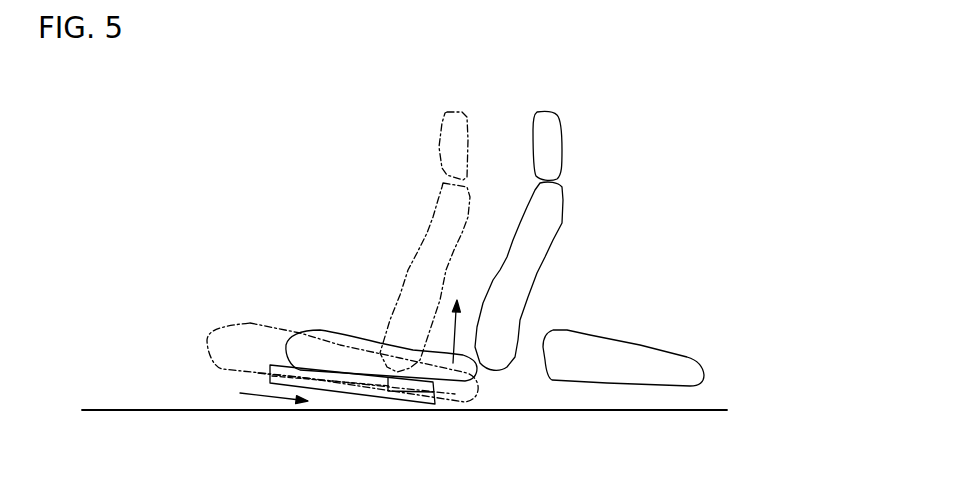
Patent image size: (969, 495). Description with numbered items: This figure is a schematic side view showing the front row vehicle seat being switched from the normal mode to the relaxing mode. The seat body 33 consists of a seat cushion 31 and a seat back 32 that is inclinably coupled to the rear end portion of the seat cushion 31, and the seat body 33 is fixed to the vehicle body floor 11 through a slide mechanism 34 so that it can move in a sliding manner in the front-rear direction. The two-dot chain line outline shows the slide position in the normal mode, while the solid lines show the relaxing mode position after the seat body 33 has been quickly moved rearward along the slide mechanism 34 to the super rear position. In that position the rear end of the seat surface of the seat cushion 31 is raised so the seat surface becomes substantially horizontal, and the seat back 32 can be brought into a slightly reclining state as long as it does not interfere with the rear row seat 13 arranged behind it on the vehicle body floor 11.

The vehicle body floor 11 is at (712, 409).
The rear row seat 13 is at (687, 356).
The seat cushion 31 is at (320, 330).
The seat back 32 is at (552, 112).
The seat body 33 is at (436, 238).
The slide mechanism 34 is at (160, 387).